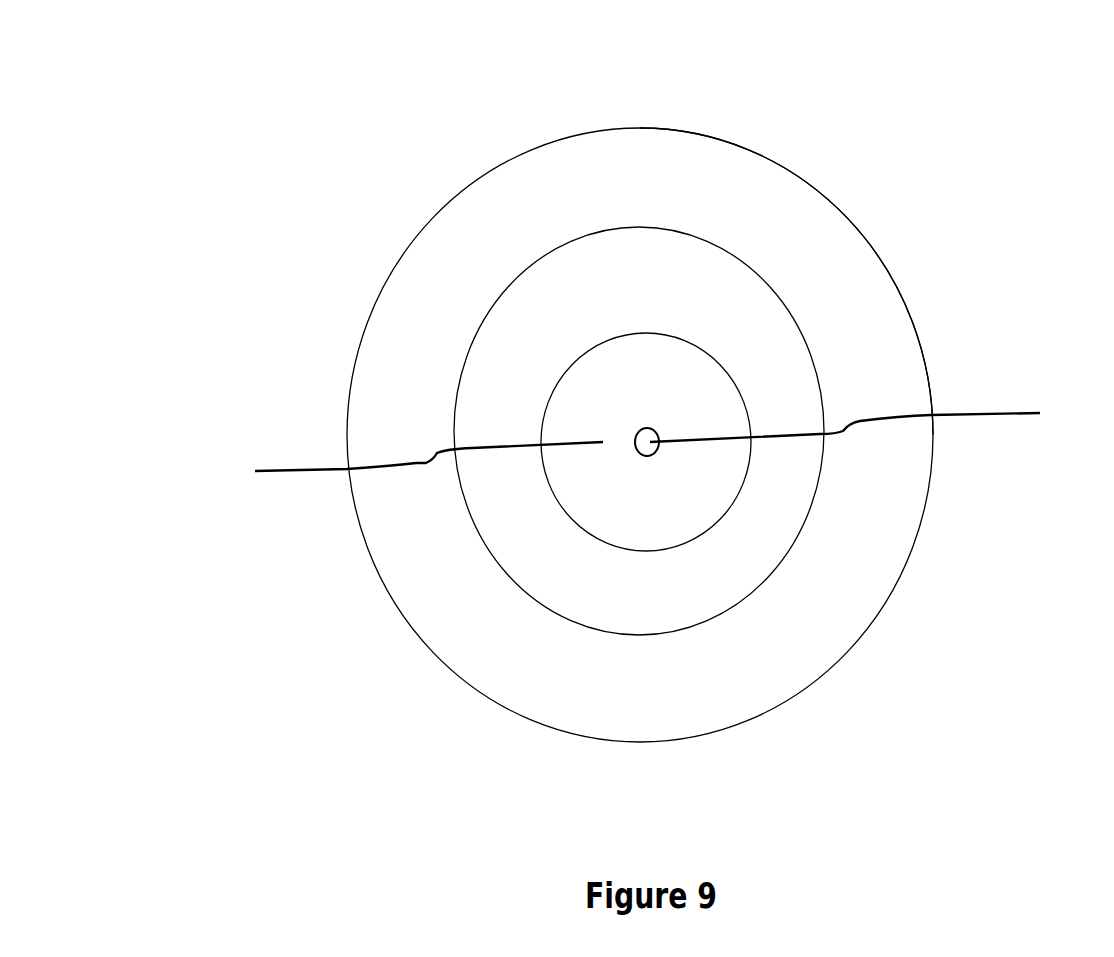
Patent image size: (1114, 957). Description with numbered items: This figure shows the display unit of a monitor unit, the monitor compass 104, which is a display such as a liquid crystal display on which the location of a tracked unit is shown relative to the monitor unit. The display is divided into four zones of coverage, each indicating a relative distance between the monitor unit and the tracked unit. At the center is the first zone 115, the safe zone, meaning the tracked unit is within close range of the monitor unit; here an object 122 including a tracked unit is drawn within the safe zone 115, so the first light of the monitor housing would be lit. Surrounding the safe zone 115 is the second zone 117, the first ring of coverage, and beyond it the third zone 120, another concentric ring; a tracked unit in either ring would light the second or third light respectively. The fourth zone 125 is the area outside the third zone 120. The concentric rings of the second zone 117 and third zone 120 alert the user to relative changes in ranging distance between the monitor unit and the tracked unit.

The monitor compass 104 is at (255, 653).
The first zone 115 is at (410, 462).
The second zone 117 is at (553, 312).
The third zone 120 is at (647, 177).
The object 122 is at (871, 423).
The fourth zone 125 is at (824, 152).